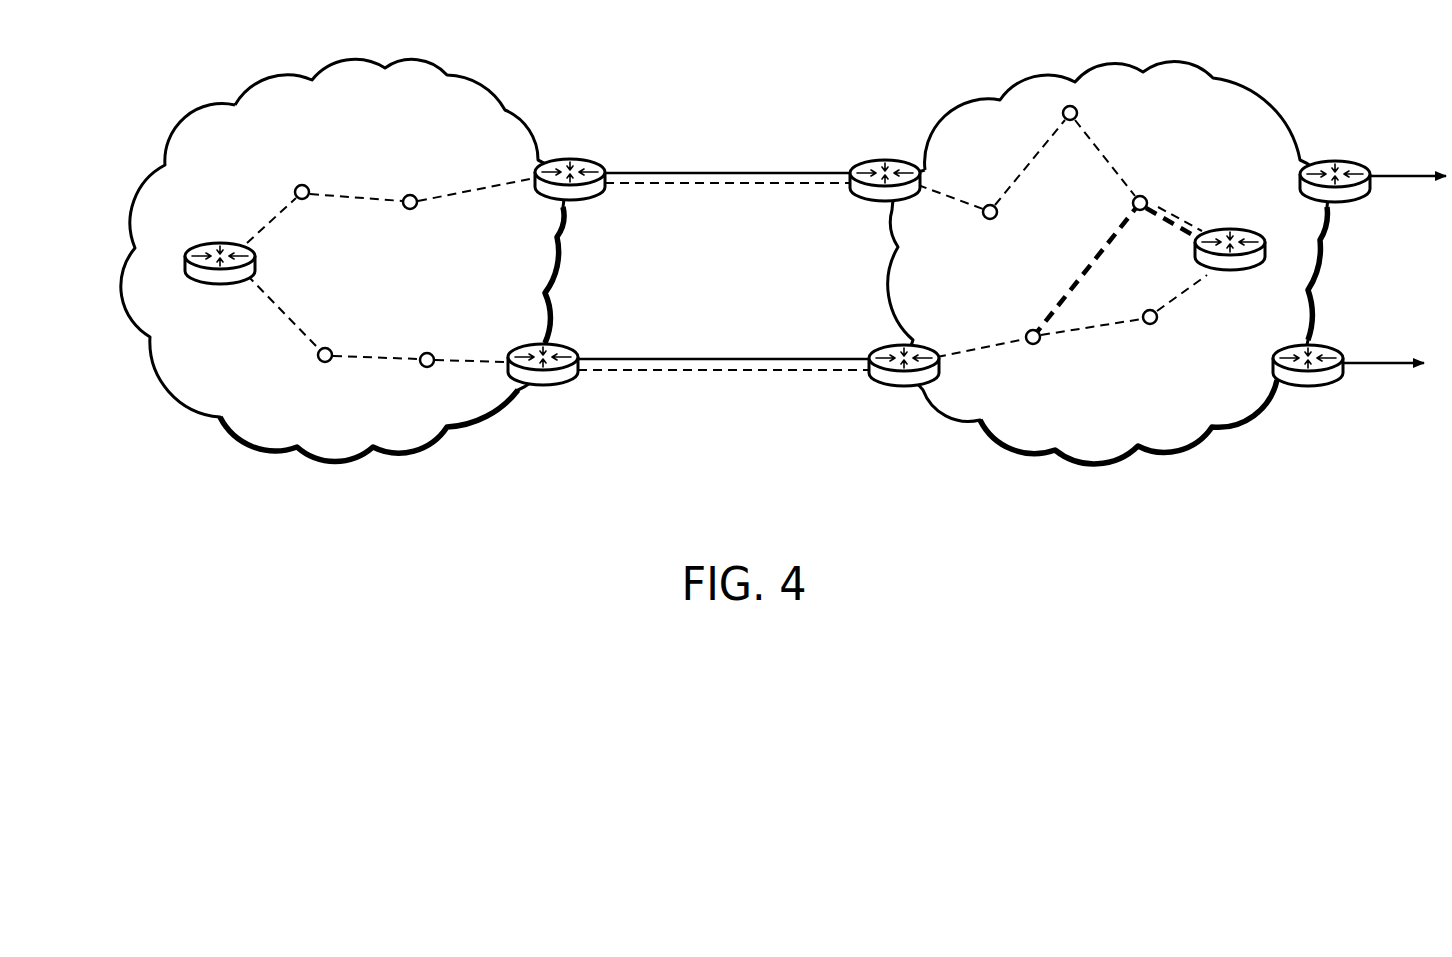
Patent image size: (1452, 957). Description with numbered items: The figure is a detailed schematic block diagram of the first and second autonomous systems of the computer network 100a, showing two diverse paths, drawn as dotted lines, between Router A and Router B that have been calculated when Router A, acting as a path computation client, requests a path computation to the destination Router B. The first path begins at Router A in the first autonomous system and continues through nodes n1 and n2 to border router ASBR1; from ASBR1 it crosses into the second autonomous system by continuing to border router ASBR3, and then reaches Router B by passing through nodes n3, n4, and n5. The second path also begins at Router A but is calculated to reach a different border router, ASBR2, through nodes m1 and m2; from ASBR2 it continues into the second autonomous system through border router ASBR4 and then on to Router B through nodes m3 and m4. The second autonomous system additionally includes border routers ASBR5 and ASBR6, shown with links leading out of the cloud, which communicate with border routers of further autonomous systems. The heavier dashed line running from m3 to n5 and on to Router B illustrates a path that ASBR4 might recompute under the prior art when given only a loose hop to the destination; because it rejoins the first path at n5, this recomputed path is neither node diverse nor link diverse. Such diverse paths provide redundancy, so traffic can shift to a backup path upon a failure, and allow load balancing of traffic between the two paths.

The computer network 100a is at (783, 326).
The Router A is at (210, 243).
The Router B is at (1239, 233).
The node n1 is at (290, 173).
The node n2 is at (409, 184).
The node n3 is at (995, 229).
The node n4 is at (1090, 108).
The node n5 is at (1158, 190).
The node m1 is at (301, 362).
The node m2 is at (430, 375).
The node m3 is at (1034, 354).
The node m4 is at (1162, 332).
The border router ASBR1* ASBR1 is at (583, 148).
The border router ASBR2* ASBR2 is at (560, 394).
The border router ASBR3 is at (888, 149).
The border router ASBR4 is at (899, 394).
The border router ASBR5* ASBR5 is at (1350, 149).
The border router ASBR6* ASBR6 is at (1318, 394).